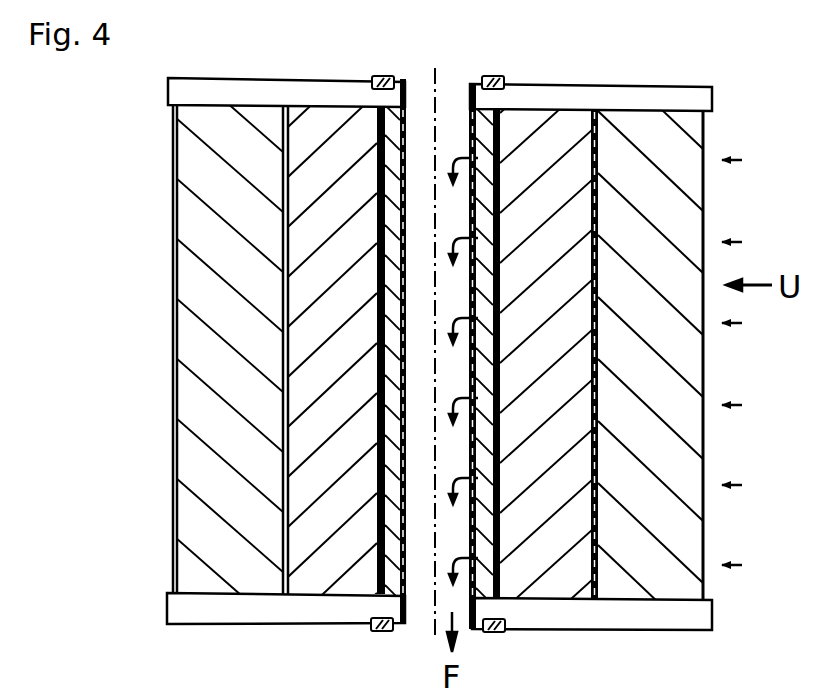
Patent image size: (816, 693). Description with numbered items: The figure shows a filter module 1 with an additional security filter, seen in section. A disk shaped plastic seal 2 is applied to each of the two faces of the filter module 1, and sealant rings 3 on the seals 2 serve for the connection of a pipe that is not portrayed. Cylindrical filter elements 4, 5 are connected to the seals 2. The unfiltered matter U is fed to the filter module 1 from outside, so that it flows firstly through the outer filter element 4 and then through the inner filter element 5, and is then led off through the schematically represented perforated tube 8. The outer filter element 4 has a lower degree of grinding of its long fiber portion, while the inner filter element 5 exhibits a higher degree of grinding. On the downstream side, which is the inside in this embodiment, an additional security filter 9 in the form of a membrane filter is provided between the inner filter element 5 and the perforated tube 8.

The filter module 1 is at (229, 346).
The plastic seal 2 is at (331, 92).
The sealant ring 3 is at (488, 78).
The filter element 4 is at (658, 142).
The filter element 5 is at (575, 157).
The perforated tube 8 is at (404, 80).
The security filter 9 is at (522, 326).